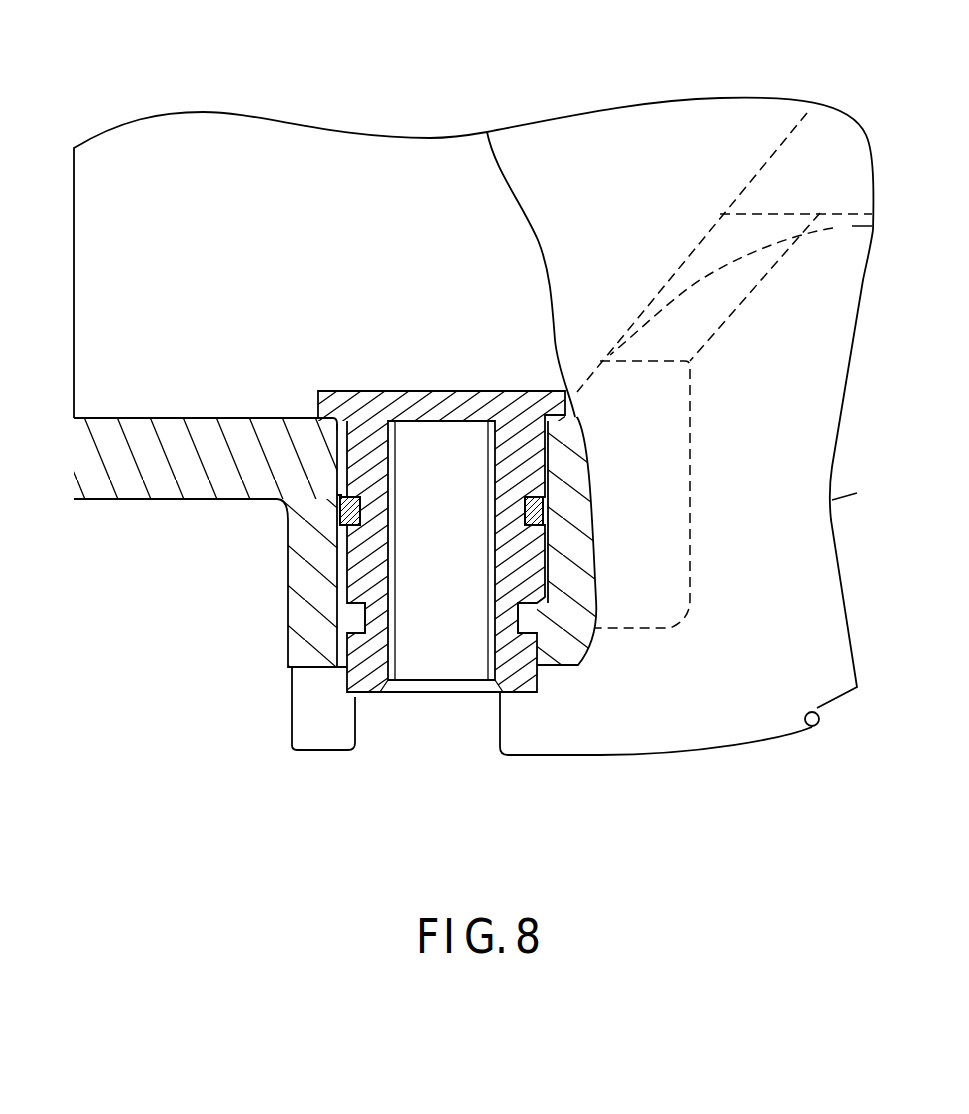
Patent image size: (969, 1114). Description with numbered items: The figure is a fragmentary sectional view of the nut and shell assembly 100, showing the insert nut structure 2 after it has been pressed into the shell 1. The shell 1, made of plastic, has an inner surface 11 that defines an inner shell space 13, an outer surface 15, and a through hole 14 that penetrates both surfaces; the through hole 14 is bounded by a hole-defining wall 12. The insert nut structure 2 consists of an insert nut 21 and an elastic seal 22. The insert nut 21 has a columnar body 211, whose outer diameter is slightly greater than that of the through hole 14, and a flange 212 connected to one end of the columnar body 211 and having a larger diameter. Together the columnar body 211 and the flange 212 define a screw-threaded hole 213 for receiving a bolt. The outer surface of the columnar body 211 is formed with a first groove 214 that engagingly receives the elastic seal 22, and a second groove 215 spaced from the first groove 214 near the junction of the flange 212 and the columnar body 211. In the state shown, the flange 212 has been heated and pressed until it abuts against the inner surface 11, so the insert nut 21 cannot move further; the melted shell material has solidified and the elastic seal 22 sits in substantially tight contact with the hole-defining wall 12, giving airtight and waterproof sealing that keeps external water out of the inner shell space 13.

The nut and shell assembly 100 is at (135, 97).
The shell 1 is at (677, 748).
The inner surface 11 is at (172, 418).
The hole-defining wall 12 is at (342, 624).
The inner shell space 13 is at (138, 340).
The through hole 14 is at (463, 705).
The outer surface 15 is at (320, 668).
The insert nut structure 2 is at (397, 372).
The insert nut 21 is at (557, 468).
The columnar body 211 is at (515, 548).
The flange 212 is at (323, 407).
The screw-threaded hole 213 is at (468, 432).
The first groove 214 is at (336, 512).
The second groove 215 is at (324, 429).
The elastic seal 22 is at (560, 503).